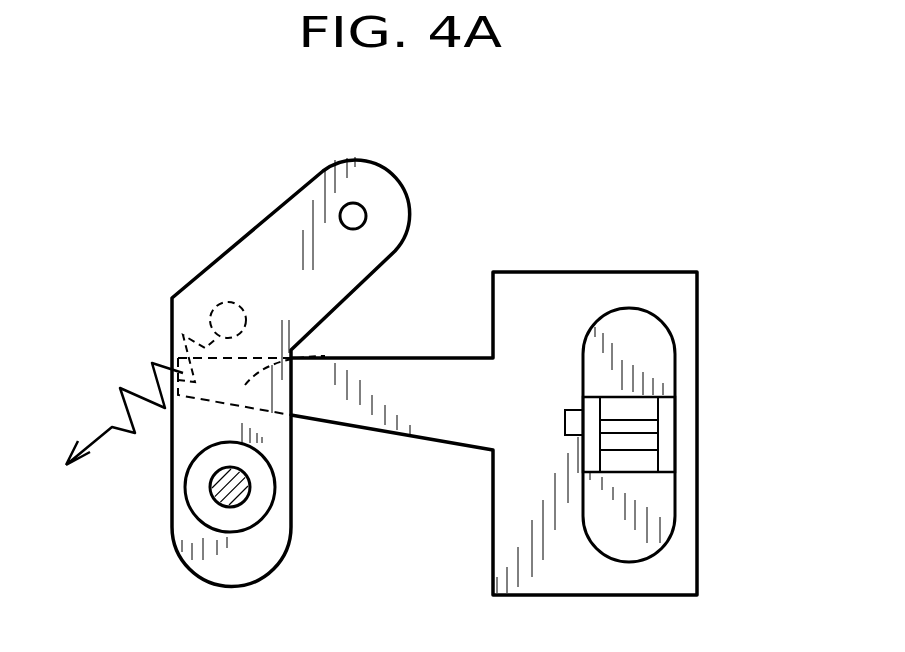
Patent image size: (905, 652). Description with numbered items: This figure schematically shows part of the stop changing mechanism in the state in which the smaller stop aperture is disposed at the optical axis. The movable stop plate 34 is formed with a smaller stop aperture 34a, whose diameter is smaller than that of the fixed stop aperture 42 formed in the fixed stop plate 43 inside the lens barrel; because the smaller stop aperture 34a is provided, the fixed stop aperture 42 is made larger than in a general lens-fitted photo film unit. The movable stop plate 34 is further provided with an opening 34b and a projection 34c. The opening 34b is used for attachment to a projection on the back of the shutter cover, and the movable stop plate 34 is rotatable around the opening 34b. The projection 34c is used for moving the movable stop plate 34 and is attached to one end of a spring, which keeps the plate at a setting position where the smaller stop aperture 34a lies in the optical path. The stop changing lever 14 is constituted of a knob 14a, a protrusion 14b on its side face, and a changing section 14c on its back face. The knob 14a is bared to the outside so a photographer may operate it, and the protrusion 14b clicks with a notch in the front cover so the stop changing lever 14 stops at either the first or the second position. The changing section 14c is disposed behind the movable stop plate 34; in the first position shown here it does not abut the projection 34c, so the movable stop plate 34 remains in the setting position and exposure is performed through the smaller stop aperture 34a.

The stop changing lever 14 is at (677, 305).
The knob 14a is at (660, 505).
The protrusion 14b is at (572, 410).
The changing section 14c is at (323, 357).
The movable stop plate 34 is at (272, 230).
The smaller stop aperture 34a is at (210, 490).
The opening 34b is at (368, 215).
The projection 34c is at (217, 307).
The fixed stop aperture 42 is at (250, 527).
The fixed stop plate 43 is at (150, 372).